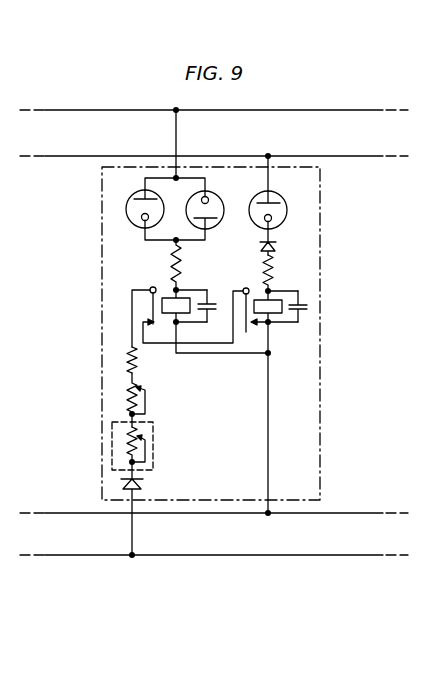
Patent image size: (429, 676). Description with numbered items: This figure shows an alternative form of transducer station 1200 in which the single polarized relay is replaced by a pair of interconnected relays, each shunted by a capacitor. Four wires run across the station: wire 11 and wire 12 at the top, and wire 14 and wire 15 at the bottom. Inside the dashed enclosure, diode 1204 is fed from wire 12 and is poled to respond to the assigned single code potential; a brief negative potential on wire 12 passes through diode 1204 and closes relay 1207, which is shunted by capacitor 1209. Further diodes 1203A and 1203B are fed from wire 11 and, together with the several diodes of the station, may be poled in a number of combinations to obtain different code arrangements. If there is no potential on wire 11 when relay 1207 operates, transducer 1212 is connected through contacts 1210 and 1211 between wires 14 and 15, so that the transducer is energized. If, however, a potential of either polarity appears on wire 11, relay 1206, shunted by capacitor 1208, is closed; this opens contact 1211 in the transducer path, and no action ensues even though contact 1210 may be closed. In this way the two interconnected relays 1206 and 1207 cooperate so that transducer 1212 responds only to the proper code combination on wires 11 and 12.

The wire 11 is at (103, 109).
The wire 12 is at (106, 155).
The wire 14 is at (88, 512).
The wire 15 is at (89, 554).
The control unit 1200 is at (102, 408).
The electron tube 1203A is at (134, 220).
The electron tube 1203B is at (243, 182).
The diode 1204 is at (292, 184).
The relay 1206 is at (165, 295).
The relay 1207 is at (259, 288).
The capacitor 1208 is at (222, 283).
The capacitor 1209 is at (302, 303).
The contact 1210 is at (253, 326).
The contact 1211 is at (143, 345).
The transducer 1212 is at (155, 440).